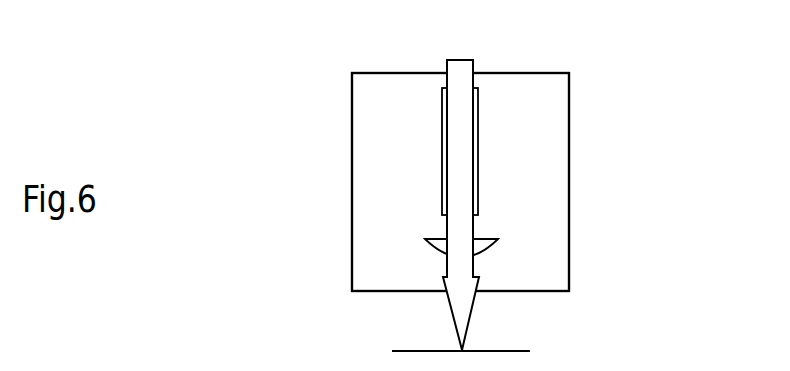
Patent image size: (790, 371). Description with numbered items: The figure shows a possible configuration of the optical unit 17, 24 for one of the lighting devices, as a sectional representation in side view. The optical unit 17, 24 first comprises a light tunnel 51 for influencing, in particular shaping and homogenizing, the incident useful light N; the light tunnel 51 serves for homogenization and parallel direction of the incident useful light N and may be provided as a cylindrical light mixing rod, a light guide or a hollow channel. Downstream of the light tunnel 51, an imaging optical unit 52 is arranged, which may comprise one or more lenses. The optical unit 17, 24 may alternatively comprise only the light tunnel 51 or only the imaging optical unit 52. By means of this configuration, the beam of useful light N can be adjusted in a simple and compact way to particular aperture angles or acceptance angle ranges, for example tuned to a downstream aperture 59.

The optical unit 17 is at (592, 128).
The optical unit 24 is at (460, 182).
The light tunnel 51 is at (480, 159).
The imaging optical unit 52 is at (492, 240).
The aperture 59 is at (505, 350).
The useful light N is at (457, 70).